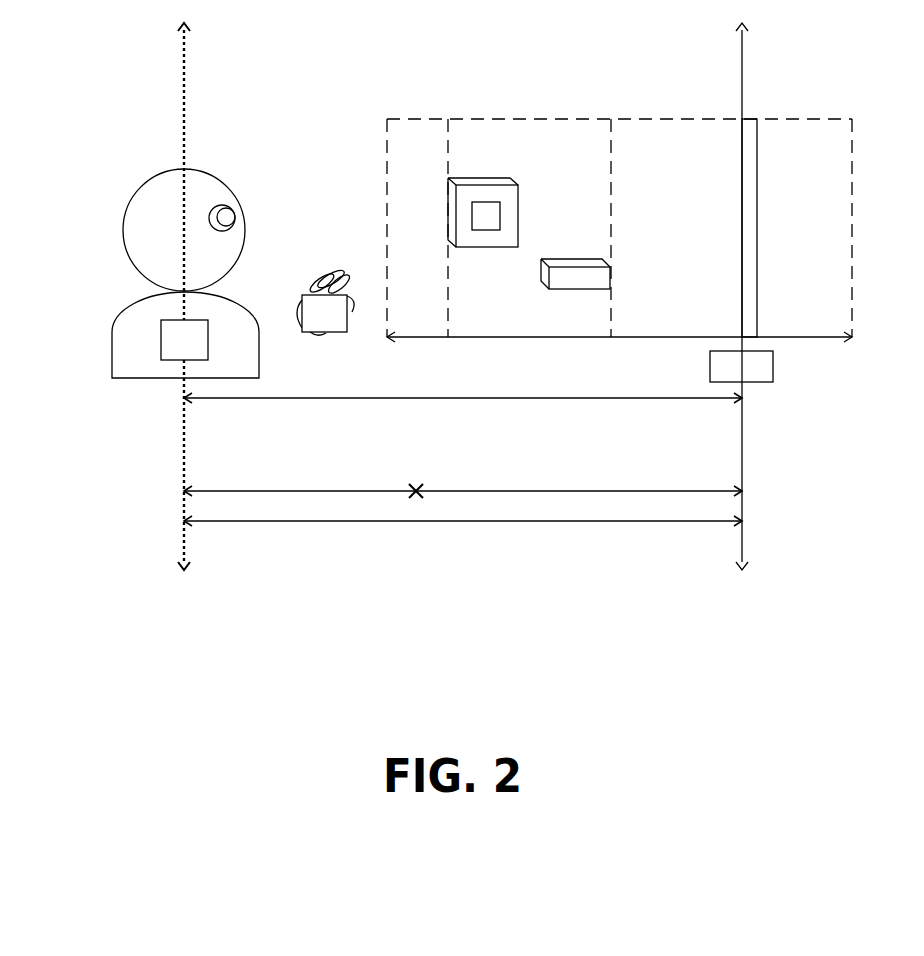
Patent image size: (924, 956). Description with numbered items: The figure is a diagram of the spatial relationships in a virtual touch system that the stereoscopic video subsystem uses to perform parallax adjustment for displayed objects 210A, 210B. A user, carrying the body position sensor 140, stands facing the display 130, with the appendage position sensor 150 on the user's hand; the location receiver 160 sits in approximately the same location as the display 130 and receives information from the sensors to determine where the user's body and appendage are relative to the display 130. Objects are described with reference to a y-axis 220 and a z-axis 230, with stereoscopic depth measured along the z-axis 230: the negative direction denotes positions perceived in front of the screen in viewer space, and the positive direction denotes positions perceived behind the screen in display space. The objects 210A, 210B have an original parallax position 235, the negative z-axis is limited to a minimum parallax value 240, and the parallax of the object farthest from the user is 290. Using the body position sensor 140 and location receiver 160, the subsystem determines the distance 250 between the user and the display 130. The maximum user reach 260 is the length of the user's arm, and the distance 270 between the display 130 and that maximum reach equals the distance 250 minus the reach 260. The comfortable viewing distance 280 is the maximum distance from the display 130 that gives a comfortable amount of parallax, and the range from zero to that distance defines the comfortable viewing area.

The display 130 is at (746, 118).
The body position sensor 140 is at (185, 296).
The appendage position sensor 150 is at (325, 301).
The location receiver 160 is at (773, 366).
The object 210A is at (485, 170).
The object 210B is at (575, 245).
The y-axis 220 is at (745, 553).
The z-axis 230 is at (820, 338).
The original parallax position p_oz 235 is at (449, 300).
The minimum parallax value p_min 240 is at (388, 332).
The distance d_z 250 is at (463, 520).
The maximum user reach d_hz 260 is at (303, 490).
The distance d_oz 270 is at (579, 490).
The comfortable viewing distance d_comf 280 is at (463, 398).
The parallax p_ozmax 290 is at (612, 160).